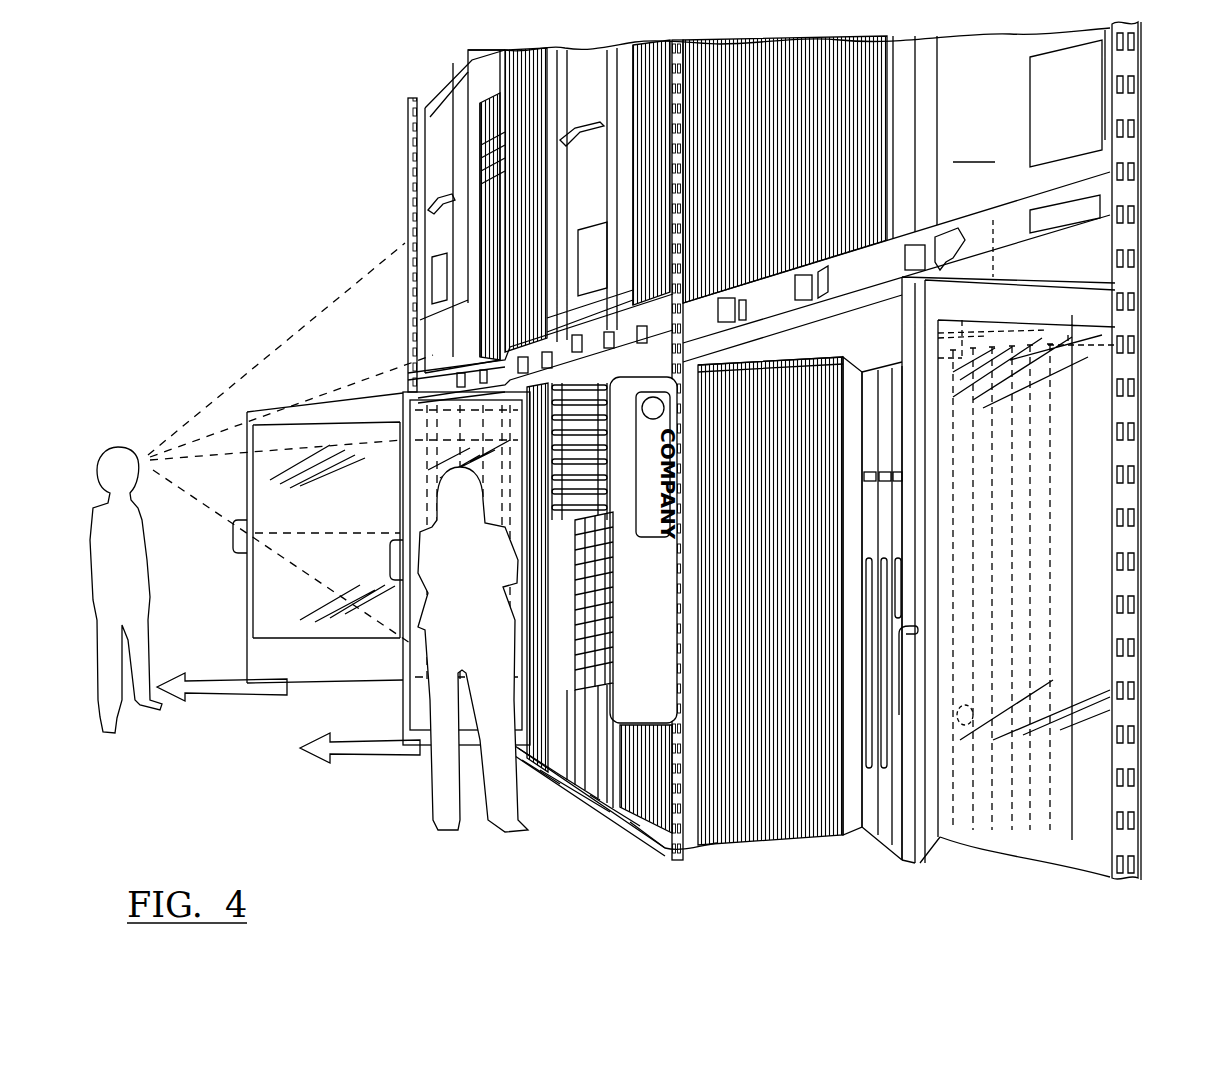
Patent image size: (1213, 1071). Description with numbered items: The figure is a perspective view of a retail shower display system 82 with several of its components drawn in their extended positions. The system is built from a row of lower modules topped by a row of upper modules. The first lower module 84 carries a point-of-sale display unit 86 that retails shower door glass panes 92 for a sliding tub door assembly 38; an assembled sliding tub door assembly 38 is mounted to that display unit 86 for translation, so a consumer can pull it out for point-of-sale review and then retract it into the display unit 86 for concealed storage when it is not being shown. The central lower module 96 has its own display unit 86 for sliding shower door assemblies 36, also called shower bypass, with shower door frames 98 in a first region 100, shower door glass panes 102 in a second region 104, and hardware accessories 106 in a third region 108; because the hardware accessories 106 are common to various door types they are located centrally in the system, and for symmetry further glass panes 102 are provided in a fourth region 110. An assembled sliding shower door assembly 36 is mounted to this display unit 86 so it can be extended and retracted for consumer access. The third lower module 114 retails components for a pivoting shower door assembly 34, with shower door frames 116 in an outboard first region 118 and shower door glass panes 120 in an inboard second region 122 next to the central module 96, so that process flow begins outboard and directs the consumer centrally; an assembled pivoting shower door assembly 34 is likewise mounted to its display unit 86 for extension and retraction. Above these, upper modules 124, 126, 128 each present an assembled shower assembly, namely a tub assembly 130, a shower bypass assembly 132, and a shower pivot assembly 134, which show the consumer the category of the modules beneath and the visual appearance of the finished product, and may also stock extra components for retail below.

The pivoting shower door assembly 34 is at (1052, 277).
The sliding shower door assembly 36 is at (390, 730).
The sliding tub door assembly 38 is at (250, 630).
The retail shower display system 82 is at (222, 187).
The lower module 84 is at (263, 705).
The point-of-sale display unit 86 is at (432, 91).
The shower door glass panes 92 is at (480, 131).
The lower module 96 is at (560, 768).
The shower door frames 98 is at (535, 758).
The first region 100 is at (548, 768).
The shower door glass panes 102 is at (647, 132).
The second region 104 is at (547, 770).
The hardware accessories 106 is at (573, 787).
The third region 108 is at (603, 810).
The fourth region 110 is at (647, 827).
The third lower module 114 is at (845, 325).
The shower door frames 116 is at (883, 843).
The first region 118 is at (862, 783).
The shower door glass panes 120 is at (820, 47).
The second region 122 is at (743, 368).
The upper module 124 is at (433, 90).
The upper module 126 is at (600, 84).
The upper module 128 is at (980, 57).
The tub assembly 130 is at (445, 174).
The shower bypass assembly 132 is at (617, 93).
The shower pivot assembly 134 is at (977, 148).